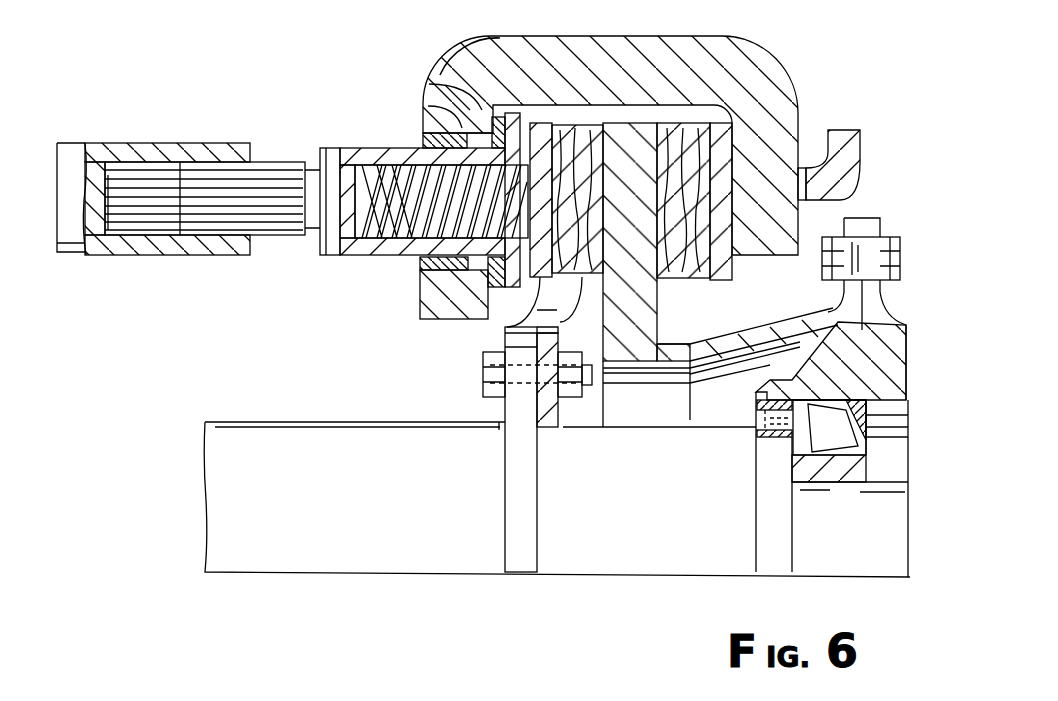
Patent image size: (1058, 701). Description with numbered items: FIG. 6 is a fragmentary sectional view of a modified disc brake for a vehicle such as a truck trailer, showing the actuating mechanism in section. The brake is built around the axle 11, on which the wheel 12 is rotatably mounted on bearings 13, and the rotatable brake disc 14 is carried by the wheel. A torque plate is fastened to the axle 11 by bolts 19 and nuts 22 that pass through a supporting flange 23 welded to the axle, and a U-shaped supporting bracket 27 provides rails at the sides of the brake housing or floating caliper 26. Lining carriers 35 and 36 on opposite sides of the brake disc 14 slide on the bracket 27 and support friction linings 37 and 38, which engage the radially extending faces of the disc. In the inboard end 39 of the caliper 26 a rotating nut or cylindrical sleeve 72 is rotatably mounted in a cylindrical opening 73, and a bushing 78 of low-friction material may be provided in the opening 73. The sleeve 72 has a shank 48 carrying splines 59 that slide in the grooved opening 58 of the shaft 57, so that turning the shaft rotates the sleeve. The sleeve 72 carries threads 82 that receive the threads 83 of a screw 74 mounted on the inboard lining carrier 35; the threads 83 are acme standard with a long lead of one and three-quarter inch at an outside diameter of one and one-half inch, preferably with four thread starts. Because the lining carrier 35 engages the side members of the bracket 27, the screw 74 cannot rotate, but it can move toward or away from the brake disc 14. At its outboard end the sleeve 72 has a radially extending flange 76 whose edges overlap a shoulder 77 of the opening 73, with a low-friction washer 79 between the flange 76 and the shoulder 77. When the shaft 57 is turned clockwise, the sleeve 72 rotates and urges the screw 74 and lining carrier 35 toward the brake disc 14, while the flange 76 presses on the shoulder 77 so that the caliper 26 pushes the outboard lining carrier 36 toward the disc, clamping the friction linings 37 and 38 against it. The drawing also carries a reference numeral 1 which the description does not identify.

The stud bolt 1 is at (866, 236).
The axle 11 is at (216, 490).
The wheel 12 is at (886, 336).
The bearings 13 is at (862, 405).
The brake disc 14 is at (637, 125).
The bolts 19 is at (492, 384).
The nuts 22 is at (586, 386).
The supporting flange 23 is at (523, 398).
The floating caliper 26 is at (765, 66).
The U-shaped supporting bracket 27 is at (860, 147).
The inboard lining carrier 35 is at (541, 130).
The outboard lining carrier 36 is at (728, 118).
The friction lining 37 is at (580, 128).
The friction lining 38 is at (705, 130).
The inboard end of caliper 39 is at (465, 80).
The shank 48 is at (290, 162).
The shaft 57 is at (74, 164).
The grooved opening 58 is at (128, 205).
The splines 59 is at (212, 200).
The cylindrical sleeve 72 is at (352, 250).
The cylindrical opening 73 is at (432, 260).
The screw 74 is at (414, 186).
The radially extending flange 76 is at (503, 117).
The shoulder 77 is at (450, 94).
The bushing 78 is at (440, 103).
The washer 79 is at (491, 50).
The threads of sleeve 82 is at (358, 215).
The threads of screw 83 is at (433, 252).